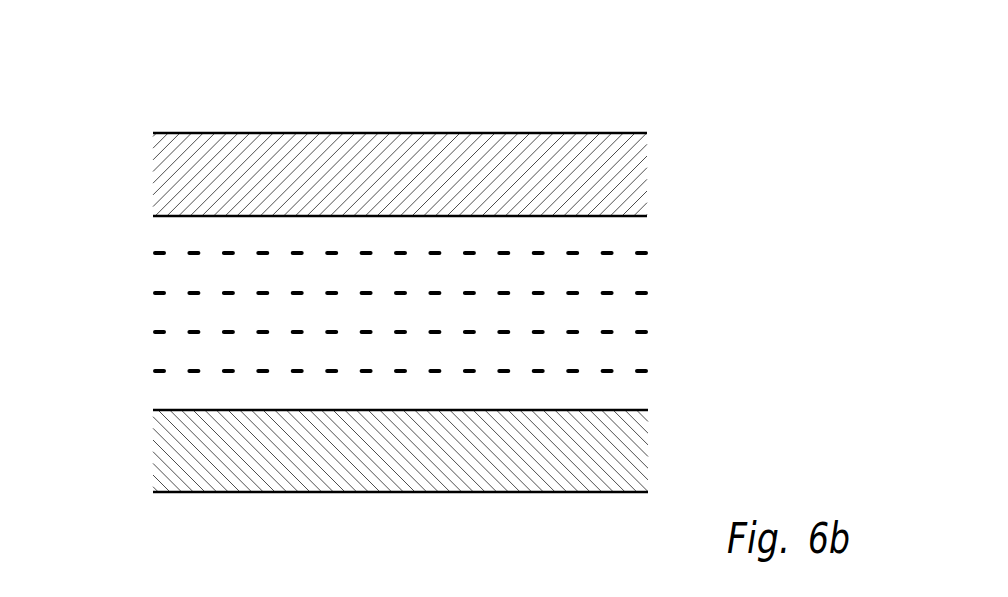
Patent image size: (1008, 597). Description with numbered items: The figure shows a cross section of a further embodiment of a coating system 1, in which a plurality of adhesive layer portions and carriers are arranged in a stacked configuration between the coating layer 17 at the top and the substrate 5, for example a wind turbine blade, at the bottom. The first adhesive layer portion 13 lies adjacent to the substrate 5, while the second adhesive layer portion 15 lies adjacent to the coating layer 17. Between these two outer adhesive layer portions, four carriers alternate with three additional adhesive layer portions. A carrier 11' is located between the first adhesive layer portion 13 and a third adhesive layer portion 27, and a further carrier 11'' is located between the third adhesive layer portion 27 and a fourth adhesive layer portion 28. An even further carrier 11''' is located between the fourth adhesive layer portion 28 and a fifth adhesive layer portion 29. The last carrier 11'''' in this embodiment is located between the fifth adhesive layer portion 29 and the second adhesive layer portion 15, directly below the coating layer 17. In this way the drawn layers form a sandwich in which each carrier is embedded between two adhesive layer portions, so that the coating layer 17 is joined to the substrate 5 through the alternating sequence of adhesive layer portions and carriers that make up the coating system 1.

The coating system 1 is at (531, 86).
The substrate 5 is at (203, 454).
The carrier 11' is at (346, 362).
The further carrier 11'' is at (344, 322).
The even further carrier 11''' is at (342, 282).
The last carrier 11'''' is at (341, 242).
The first adhesive layer portion 13 is at (642, 393).
The second adhesive layer portion 15 is at (637, 233).
The coating layer 17 is at (633, 162).
The third adhesive layer portion 27 is at (635, 355).
The fourth adhesive layer portion 28 is at (638, 310).
The fifth adhesive layer portion 29 is at (640, 277).